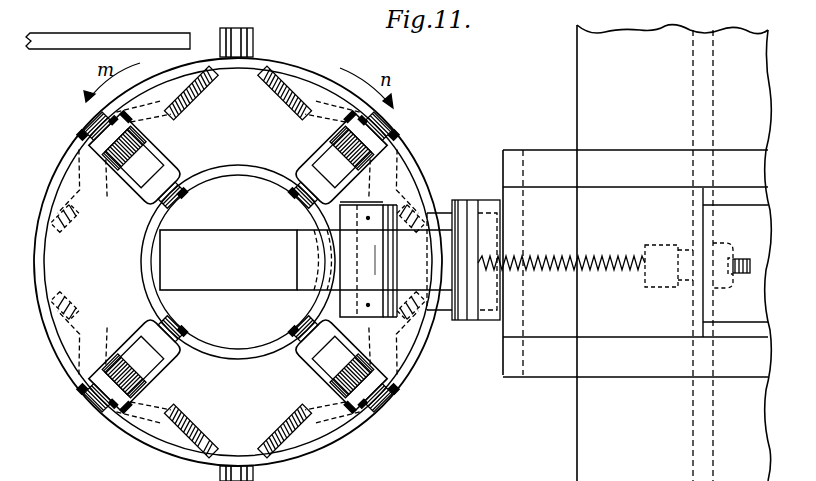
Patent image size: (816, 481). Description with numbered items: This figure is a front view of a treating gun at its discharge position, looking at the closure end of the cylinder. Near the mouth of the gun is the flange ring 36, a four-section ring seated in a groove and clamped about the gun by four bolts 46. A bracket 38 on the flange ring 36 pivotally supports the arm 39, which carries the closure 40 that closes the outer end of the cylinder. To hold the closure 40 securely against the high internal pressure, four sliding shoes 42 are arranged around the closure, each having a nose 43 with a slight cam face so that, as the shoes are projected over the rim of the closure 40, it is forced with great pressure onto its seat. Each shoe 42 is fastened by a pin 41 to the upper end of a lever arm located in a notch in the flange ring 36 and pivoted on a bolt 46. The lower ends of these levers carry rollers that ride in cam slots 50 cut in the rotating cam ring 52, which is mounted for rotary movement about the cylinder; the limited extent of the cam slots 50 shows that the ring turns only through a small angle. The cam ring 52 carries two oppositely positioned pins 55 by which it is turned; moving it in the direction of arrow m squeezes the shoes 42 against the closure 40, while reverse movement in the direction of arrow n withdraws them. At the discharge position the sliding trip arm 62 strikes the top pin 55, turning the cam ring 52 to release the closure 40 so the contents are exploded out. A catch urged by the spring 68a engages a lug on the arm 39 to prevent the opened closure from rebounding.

The flange ring 36 is at (392, 165).
The bracket 38 is at (397, 210).
The arm 39 is at (235, 288).
The closure 40 is at (237, 343).
The pin 41 is at (158, 147).
The sliding shoe 42 is at (173, 365).
The nose 43 is at (183, 200).
The bolt 46 is at (63, 363).
The cam slot 50 is at (107, 200).
The cam ring 52 is at (318, 77).
The pin 55 is at (257, 37).
The sliding trip arm 62 is at (181, 21).
The spring 68a is at (600, 262).